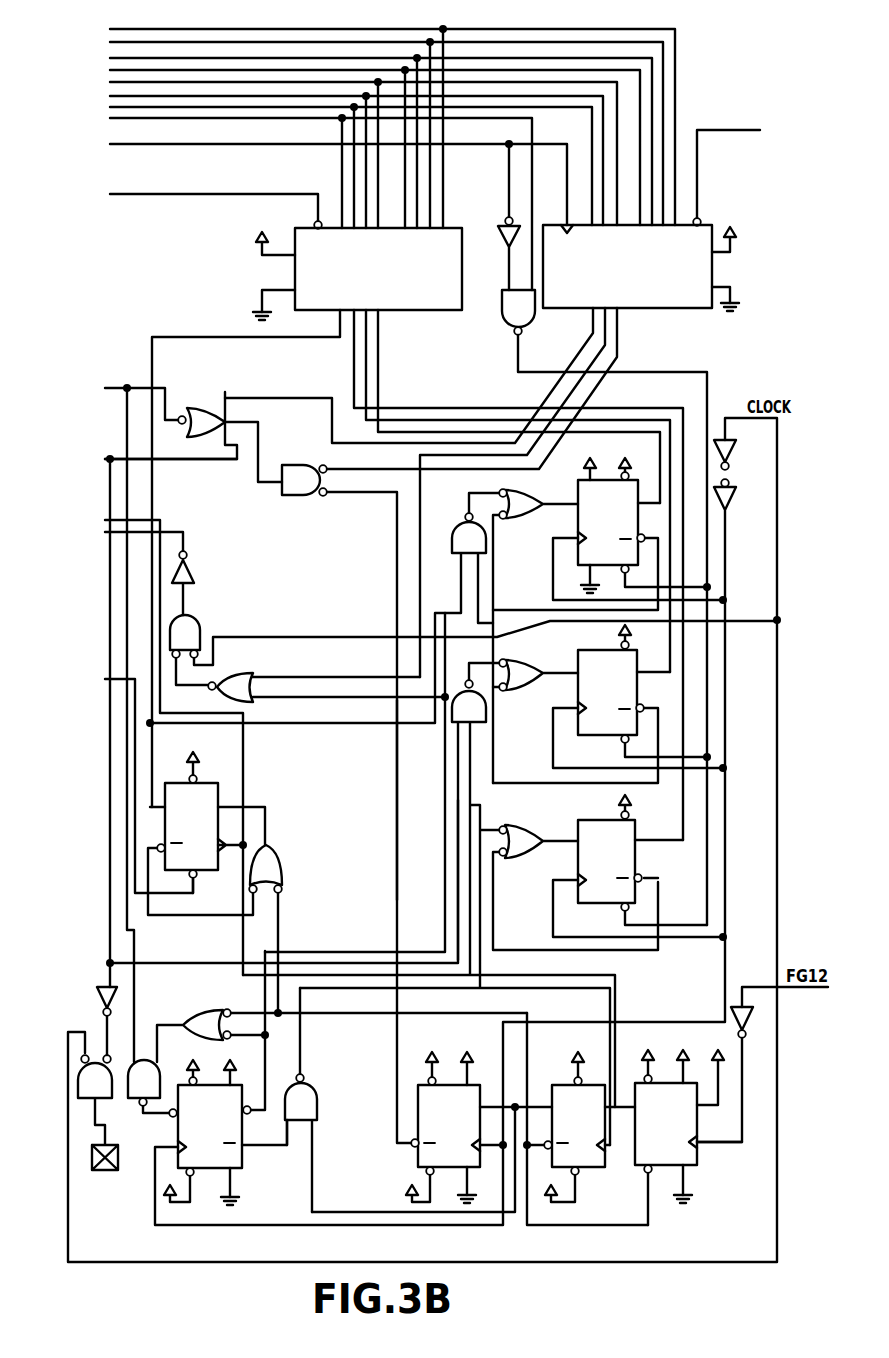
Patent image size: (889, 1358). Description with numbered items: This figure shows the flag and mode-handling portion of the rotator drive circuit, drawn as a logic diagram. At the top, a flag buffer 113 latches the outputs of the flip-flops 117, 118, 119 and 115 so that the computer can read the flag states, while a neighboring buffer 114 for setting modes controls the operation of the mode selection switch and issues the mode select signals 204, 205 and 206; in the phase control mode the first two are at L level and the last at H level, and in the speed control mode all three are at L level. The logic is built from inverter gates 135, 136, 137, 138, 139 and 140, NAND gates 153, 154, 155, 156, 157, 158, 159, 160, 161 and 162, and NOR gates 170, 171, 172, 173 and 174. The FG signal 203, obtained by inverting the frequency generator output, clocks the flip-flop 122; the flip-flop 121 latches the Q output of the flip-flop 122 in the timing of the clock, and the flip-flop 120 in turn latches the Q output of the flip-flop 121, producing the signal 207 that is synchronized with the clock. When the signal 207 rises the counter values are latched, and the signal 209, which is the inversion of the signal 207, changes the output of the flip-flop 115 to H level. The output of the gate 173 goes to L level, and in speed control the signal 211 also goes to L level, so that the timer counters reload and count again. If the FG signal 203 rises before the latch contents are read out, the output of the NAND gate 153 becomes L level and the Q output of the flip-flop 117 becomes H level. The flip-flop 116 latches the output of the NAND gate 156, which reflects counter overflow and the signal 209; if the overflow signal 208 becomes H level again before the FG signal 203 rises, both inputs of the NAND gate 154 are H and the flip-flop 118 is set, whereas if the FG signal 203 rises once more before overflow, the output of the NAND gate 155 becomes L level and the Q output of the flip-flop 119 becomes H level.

The flag buffer 113 is at (420, 312).
The buffer for setting modes 114 is at (712, 275).
The flip-flop 115 is at (212, 783).
The flip-flop 116 is at (242, 1165).
The flip-flop 117 is at (578, 525).
The flip-flop 118 is at (578, 690).
The flip-flop 119 is at (578, 858).
The flip-flop 120 is at (420, 1165).
The flip-flop 121 is at (595, 1167).
The flip-flop 122 is at (697, 1165).
The inverter gate 135 is at (196, 573).
The inverter gate 136 is at (97, 995).
The inverter gate 137 is at (733, 452).
The inverter gate 138 is at (733, 500).
The inverter gate 139 is at (500, 232).
The inverter gate 140 is at (752, 1012).
The NAND gate 153 is at (455, 530).
The NAND gate 154 is at (455, 725).
The NAND gate 155 is at (318, 1105).
The NAND gate 156 is at (138, 1103).
The NAND gate 157 is at (205, 1010).
The NAND gate 158 is at (282, 862).
The NAND gate 159 is at (528, 490).
The NAND gate 160 is at (525, 660).
The NAND gate 161 is at (522, 825).
The NAND gate 162 is at (500, 318).
The NOR gate 170 is at (305, 497).
The NOR gate 171 is at (201, 636).
The NOR gate 172 is at (240, 675).
The NOR gate 173 is at (200, 408).
The NOR gate 174 is at (78, 1085).
The FG signal 203 is at (720, 1143).
The mode select signal 204 is at (575, 362).
The mode select signal 205 is at (606, 334).
The mode select signal 206 is at (617, 356).
The signal 207 is at (455, 885).
The overflow signal 208 is at (190, 462).
The signal 209 is at (318, 1016).
The signal 211 is at (395, 860).